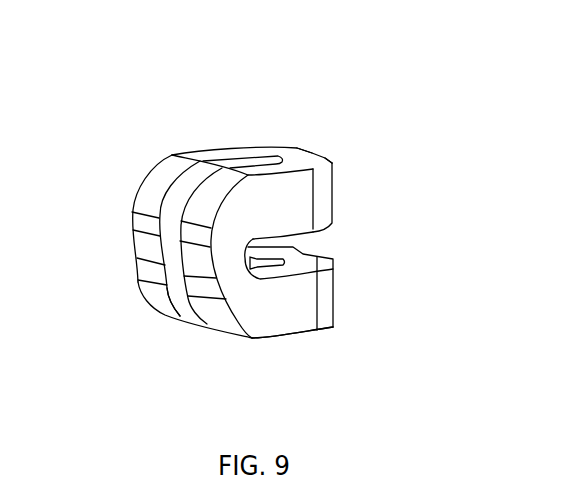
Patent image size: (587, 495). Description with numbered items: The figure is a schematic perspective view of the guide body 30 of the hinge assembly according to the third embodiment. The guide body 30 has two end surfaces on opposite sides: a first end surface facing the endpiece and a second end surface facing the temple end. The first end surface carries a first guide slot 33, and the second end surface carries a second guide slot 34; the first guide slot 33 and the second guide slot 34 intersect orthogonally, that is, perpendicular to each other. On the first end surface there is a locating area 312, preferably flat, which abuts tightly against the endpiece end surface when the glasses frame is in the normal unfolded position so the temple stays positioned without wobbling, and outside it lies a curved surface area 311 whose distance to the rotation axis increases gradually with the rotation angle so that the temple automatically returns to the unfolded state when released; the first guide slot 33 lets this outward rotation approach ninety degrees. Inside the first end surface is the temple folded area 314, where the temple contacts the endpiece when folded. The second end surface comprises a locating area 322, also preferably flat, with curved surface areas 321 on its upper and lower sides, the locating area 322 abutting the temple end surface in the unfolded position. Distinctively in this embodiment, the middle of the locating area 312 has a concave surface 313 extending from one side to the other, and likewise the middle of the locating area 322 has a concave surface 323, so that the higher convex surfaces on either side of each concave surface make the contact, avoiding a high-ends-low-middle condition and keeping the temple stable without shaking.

The guide body 30 is at (197, 87).
The curved surface area 311 is at (257, 148).
The locating area 312 is at (293, 148).
The concave surface 313 is at (305, 155).
The temple folded area 314 is at (280, 317).
The curved surface areas 321 is at (200, 200).
The locating area 322 is at (140, 222).
The concave surface 323 is at (143, 248).
The first guide slot 33 is at (311, 245).
The second guide slot 34 is at (181, 310).